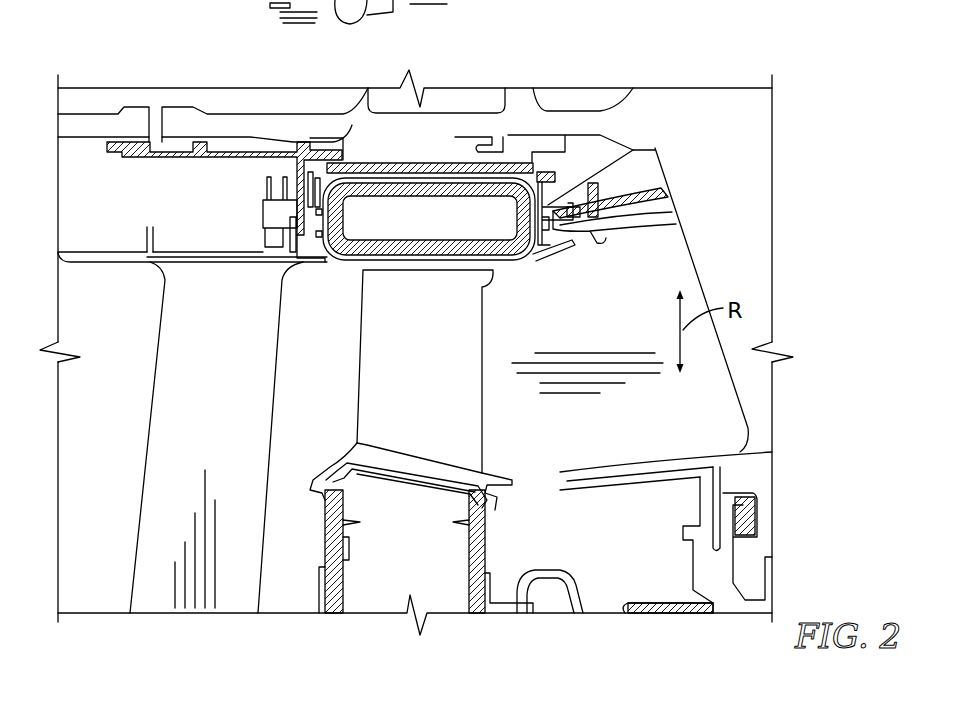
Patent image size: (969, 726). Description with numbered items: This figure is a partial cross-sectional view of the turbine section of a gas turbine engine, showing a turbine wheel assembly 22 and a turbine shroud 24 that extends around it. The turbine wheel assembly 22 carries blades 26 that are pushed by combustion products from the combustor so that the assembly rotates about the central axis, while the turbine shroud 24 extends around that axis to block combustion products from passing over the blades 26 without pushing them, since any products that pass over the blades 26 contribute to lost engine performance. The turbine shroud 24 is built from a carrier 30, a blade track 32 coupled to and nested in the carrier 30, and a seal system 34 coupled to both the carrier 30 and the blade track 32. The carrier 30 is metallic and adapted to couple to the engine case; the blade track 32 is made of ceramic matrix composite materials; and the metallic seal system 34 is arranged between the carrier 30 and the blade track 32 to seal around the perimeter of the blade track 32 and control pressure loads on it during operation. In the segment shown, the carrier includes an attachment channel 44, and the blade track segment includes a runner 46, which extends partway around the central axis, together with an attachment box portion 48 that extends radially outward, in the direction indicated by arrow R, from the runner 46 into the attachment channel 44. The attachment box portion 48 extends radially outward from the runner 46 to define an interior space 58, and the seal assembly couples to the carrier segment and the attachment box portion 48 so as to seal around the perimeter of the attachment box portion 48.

The turbine wheel assembly 22 is at (509, 284).
The turbine shroud 24 is at (503, 128).
The blades 26 is at (461, 345).
The carrier 30 is at (434, 152).
The blade track 32 is at (513, 174).
The seal system 34 is at (318, 256).
The attachment channel 44 is at (328, 163).
The runner 46 is at (411, 271).
The attachment box portion 48 is at (545, 188).
The interior space 58 is at (552, 199).